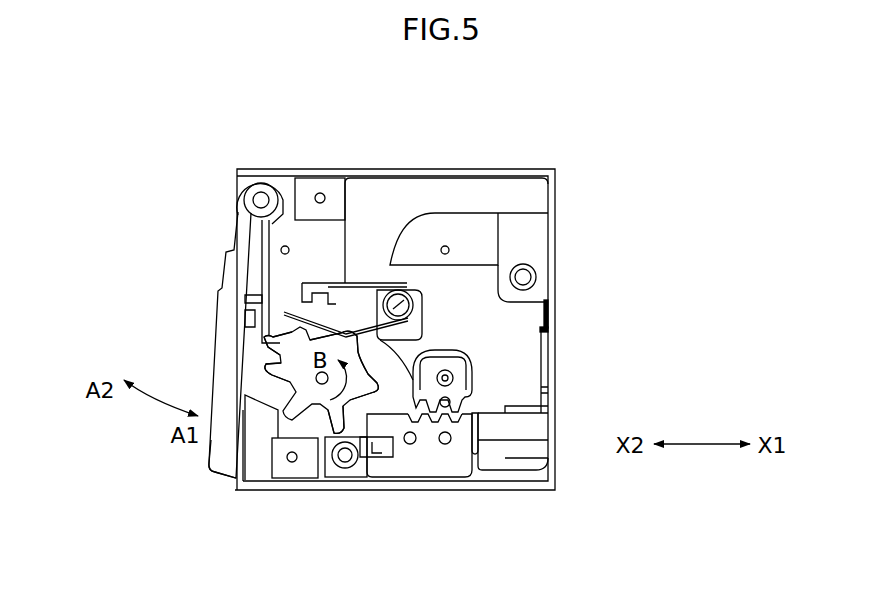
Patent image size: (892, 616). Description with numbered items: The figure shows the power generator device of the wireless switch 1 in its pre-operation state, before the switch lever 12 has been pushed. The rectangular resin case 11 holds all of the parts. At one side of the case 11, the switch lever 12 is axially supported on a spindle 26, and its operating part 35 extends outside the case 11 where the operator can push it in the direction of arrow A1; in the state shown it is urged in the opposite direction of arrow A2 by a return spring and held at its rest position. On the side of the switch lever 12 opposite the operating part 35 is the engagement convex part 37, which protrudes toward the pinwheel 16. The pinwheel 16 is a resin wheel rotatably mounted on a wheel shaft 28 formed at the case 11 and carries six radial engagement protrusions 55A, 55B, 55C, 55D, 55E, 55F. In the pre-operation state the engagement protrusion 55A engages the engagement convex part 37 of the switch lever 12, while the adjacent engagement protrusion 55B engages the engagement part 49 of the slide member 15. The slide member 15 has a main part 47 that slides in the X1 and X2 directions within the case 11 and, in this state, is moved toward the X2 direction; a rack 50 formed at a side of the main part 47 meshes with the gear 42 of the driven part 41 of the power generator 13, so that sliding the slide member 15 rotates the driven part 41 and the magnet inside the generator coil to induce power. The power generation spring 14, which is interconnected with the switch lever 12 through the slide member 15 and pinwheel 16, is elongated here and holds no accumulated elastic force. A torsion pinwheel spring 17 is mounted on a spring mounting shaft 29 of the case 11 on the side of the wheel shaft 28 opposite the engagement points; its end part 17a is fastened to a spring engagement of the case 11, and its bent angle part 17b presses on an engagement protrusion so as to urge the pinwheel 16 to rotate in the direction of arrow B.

The switch 1 is at (592, 126).
The case 11 is at (515, 165).
The switch lever 12 is at (228, 356).
The power generator 13 is at (528, 364).
The power generation spring 14 is at (520, 427).
The slide member 15 is at (435, 455).
The pinwheel 16 is at (356, 357).
The pinwheel spring 17 is at (405, 280).
The end part 17a is at (377, 283).
The angle part 17b is at (333, 322).
The spindle 26 is at (261, 196).
The wheel shaft 28 is at (316, 384).
The spring mounting shaft 29 is at (414, 300).
The operating part 35 is at (204, 460).
The engagement convex part 37 is at (262, 427).
The driven part 41 is at (473, 366).
The gear 42 is at (462, 397).
The main part 47 is at (402, 455).
The engagement part 49 is at (345, 458).
The rack 50 is at (450, 422).
The engagement protrusion 55A is at (272, 408).
The engagement protrusion 55B is at (332, 436).
The engagement protrusion 55C is at (447, 376).
The engagement protrusion 55D is at (349, 334).
The engagement protrusion 55E is at (270, 336).
The engagement protrusion 55F is at (264, 368).